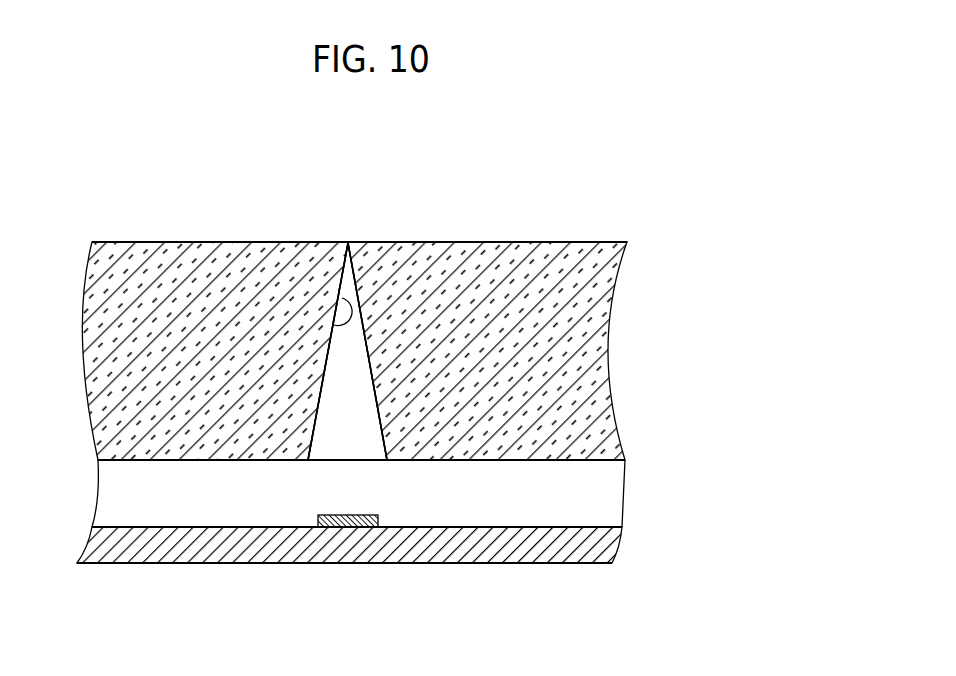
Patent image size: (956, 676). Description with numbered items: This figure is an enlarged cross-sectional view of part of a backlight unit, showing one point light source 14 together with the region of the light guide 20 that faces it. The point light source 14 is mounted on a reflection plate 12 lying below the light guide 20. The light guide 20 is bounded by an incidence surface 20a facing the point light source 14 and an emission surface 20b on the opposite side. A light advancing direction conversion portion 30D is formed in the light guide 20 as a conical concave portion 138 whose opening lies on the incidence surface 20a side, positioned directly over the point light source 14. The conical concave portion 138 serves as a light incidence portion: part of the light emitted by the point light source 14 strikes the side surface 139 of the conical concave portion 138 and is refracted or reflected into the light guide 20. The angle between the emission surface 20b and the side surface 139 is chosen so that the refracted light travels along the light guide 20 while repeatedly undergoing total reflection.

The reflection plate 12 is at (548, 563).
The point light source 14 is at (377, 513).
The light guide 20 is at (547, 253).
The incidence surface 20a is at (592, 461).
The emission surface 20b is at (605, 242).
The light advancing direction conversion portion 30D is at (365, 218).
The conical concave portion 138 is at (348, 300).
The side surface 139 is at (340, 302).